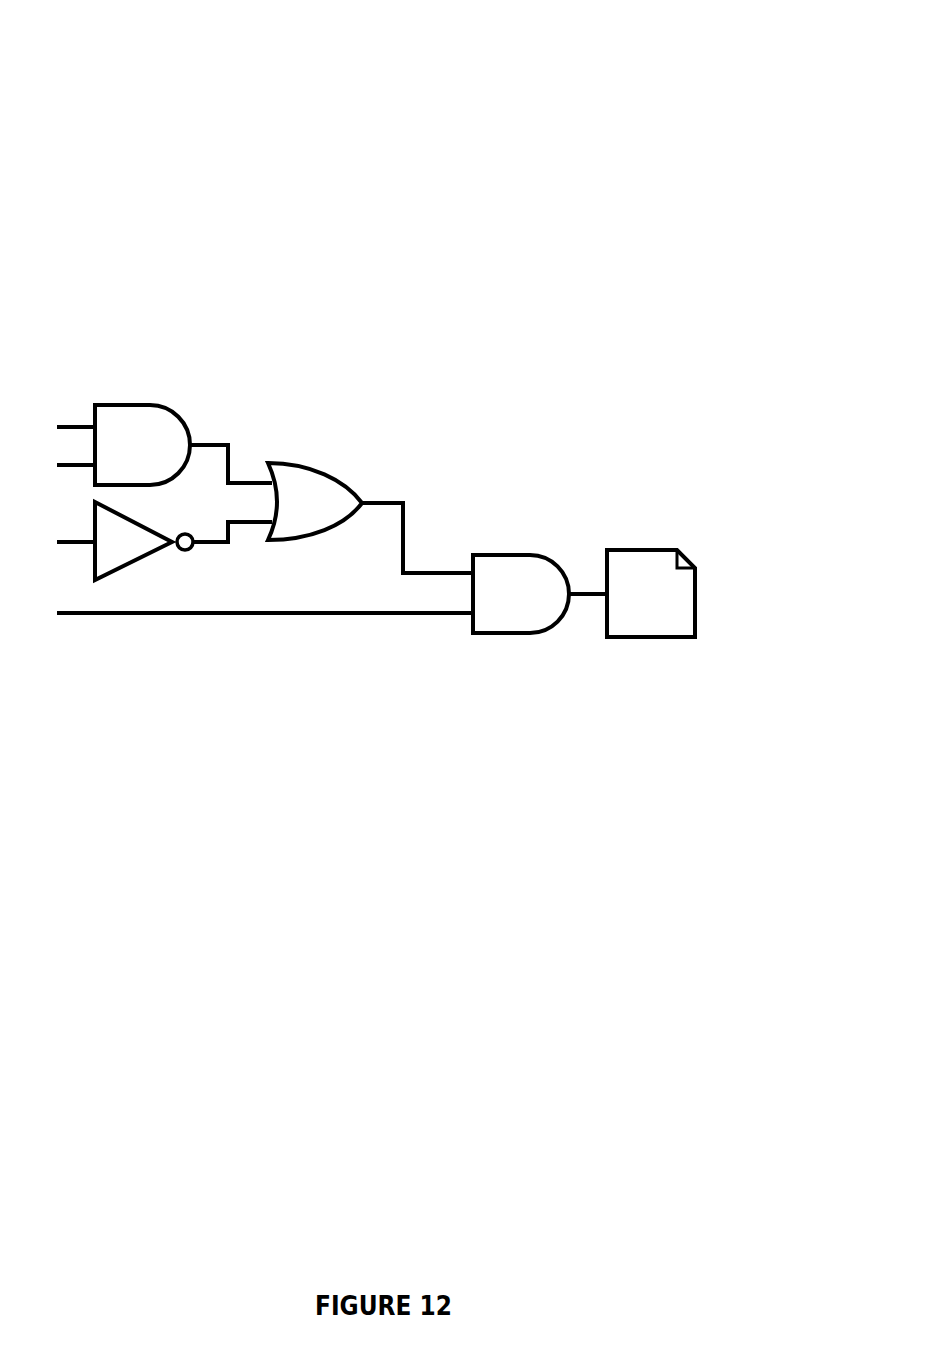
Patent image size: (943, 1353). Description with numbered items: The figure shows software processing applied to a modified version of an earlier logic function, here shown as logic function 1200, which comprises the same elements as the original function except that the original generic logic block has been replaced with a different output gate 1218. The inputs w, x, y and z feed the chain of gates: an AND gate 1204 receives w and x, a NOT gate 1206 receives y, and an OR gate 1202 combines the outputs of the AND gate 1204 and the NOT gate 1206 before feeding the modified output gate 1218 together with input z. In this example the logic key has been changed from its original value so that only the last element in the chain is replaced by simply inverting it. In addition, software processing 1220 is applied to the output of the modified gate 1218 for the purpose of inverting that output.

The logic function 1200 is at (676, 88).
The software processing 1220 is at (36, 402).
The AND gate S1 1204 is at (155, 404).
The inverter S2 1206 is at (137, 556).
The OR gate S0 1202 is at (335, 472).
The output gate 1218 is at (520, 551).